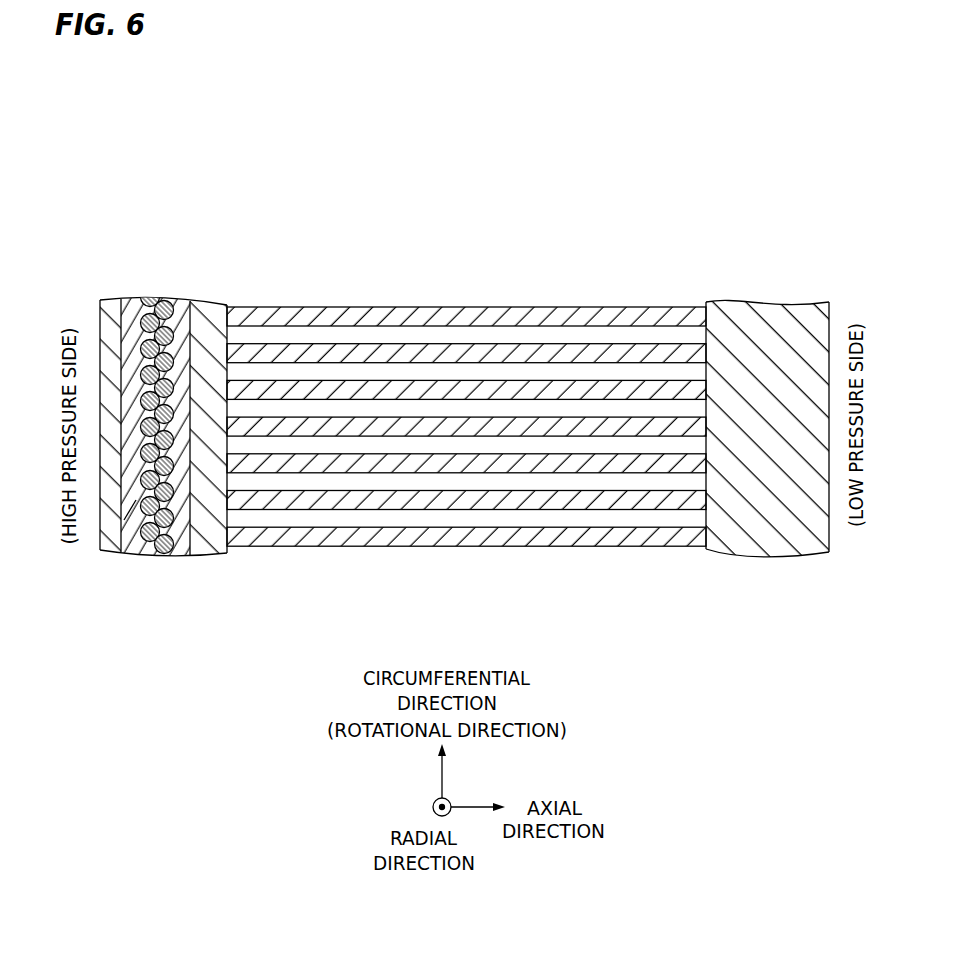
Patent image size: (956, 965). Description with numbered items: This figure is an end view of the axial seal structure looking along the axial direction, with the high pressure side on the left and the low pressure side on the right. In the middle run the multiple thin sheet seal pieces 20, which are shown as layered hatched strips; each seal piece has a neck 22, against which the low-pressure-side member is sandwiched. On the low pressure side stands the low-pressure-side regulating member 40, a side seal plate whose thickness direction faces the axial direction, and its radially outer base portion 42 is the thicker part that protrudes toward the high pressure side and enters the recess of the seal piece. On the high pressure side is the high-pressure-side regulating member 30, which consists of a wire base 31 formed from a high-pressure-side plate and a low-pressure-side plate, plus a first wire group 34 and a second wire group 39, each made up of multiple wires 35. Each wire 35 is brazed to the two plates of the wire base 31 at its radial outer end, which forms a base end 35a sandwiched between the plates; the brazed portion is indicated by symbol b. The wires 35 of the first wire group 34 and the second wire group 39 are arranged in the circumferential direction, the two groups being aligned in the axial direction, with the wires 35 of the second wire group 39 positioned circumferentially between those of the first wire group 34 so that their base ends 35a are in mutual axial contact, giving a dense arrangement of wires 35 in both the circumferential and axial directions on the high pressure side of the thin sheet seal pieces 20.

The thin sheet seal piece 20 is at (466, 382).
The neck 22 is at (487, 387).
The high-pressure-side regulating member 30 is at (164, 450).
The wire base 31 is at (210, 310).
The first wire group 34 is at (146, 546).
The wire 35 is at (186, 486).
The base end 35a is at (168, 496).
The second wire group 39 is at (162, 548).
The low-pressure-side regulating member 40 is at (768, 434).
The base portion 42 is at (783, 518).
The brazed portion b is at (133, 505).